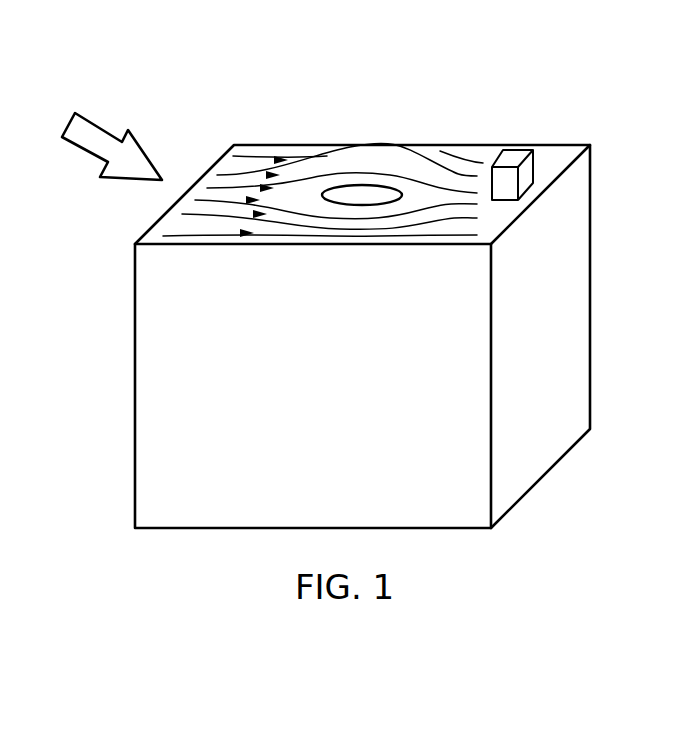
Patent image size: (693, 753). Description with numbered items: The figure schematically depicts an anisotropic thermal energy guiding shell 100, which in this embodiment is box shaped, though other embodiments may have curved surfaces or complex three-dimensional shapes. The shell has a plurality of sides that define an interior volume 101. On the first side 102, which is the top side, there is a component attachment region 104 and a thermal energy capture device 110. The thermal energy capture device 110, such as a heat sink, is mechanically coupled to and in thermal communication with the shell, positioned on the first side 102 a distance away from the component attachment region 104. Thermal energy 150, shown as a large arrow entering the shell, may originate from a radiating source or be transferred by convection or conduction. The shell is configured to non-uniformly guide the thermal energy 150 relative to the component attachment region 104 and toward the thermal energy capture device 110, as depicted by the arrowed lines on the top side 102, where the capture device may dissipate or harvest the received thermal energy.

The anisotropic thermal energy guiding shell 100 is at (597, 102).
The interior volume 101 is at (175, 398).
The first side 102 is at (255, 168).
The component attachment region 104 is at (365, 193).
The thermal energy capture device 110 is at (515, 160).
The thermal energy 150 is at (138, 133).